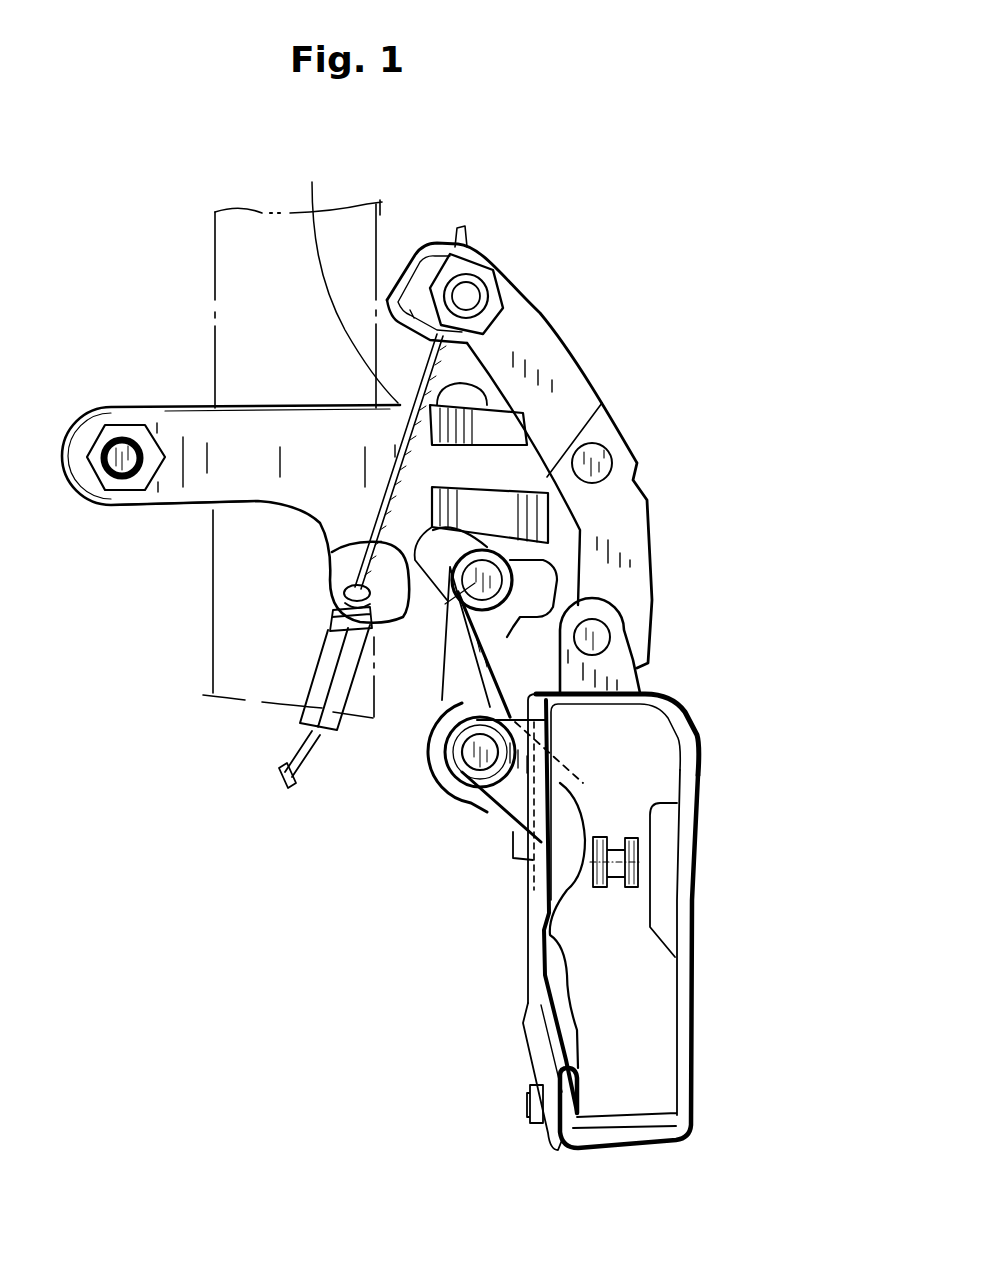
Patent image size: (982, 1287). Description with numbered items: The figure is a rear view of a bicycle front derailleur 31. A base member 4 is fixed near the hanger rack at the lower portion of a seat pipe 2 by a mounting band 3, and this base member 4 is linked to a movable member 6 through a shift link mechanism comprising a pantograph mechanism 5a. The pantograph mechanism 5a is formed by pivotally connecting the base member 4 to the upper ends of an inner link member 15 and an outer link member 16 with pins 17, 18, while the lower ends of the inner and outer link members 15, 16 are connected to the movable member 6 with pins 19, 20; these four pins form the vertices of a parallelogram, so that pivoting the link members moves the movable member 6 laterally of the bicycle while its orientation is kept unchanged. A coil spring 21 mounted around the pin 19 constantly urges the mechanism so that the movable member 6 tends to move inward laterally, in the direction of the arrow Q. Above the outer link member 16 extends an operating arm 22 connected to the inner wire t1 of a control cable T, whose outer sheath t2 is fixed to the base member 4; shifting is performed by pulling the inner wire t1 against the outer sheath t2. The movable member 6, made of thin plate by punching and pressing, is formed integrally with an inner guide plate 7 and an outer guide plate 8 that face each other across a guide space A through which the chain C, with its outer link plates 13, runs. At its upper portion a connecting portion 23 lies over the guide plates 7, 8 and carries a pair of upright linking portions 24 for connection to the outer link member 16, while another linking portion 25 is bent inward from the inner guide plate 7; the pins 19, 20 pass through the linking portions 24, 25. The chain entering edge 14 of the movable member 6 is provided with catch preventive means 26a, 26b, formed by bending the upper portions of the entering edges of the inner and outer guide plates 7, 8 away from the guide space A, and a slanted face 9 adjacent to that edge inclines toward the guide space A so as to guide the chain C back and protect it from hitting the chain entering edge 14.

The seat pipe 2 is at (213, 273).
The mounting band 3 is at (128, 513).
The base member 4 is at (351, 276).
The pantograph mechanism 5a is at (670, 532).
The operating arm 22 is at (567, 333).
The pin 18 is at (607, 447).
The pin 17 is at (445, 604).
The inner link member 15 is at (447, 673).
The chain entering edge 14 is at (538, 692).
The pin 19 is at (473, 757).
The coil spring 21 is at (437, 797).
The outer link member 16 is at (653, 598).
The pin 20 is at (593, 637).
The upright linking portions 24 is at (603, 603).
The connecting portion 23 is at (645, 680).
The guide space A is at (663, 725).
The outer guide plate 8 is at (695, 903).
The movable member 6 is at (702, 835).
The catch preventive means 26b is at (700, 760).
The catch preventive means 26a is at (600, 806).
The slanted face 9 is at (553, 727).
The linking portion 25 is at (523, 907).
The inner guide plate 7 is at (540, 905).
The chain C is at (613, 890).
The outer link plates 13 is at (597, 890).
The bicycle front derailleur 31 is at (215, 870).
The inner wire t1 is at (300, 740).
The outer sheath t2 is at (343, 733).
The control cable T is at (385, 858).
The arrow Q is at (442, 1037).